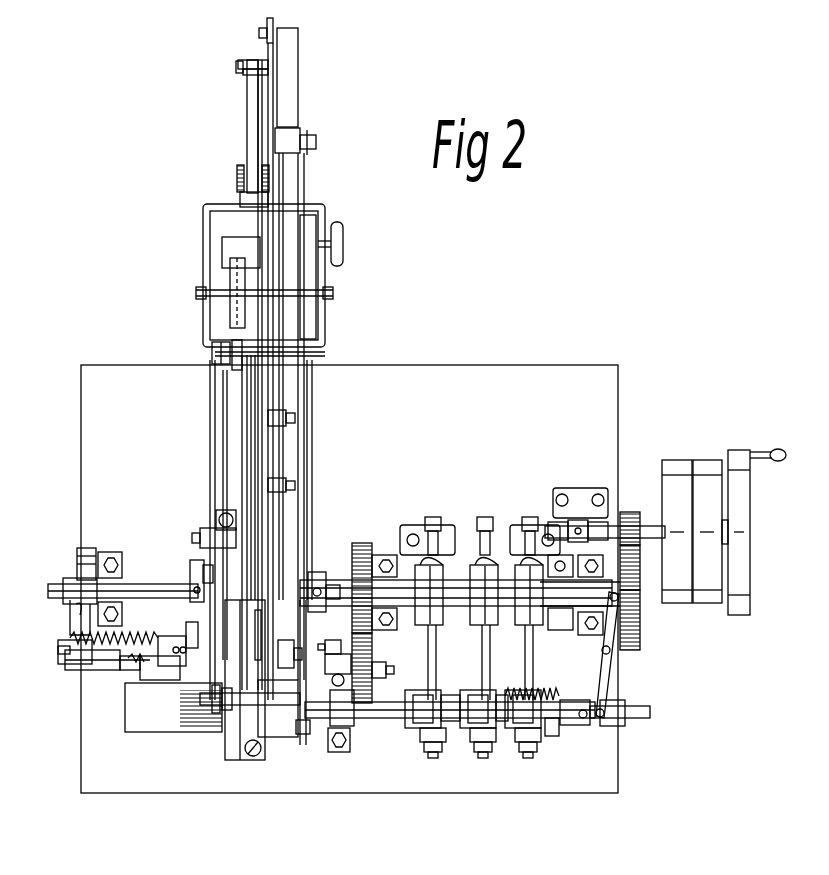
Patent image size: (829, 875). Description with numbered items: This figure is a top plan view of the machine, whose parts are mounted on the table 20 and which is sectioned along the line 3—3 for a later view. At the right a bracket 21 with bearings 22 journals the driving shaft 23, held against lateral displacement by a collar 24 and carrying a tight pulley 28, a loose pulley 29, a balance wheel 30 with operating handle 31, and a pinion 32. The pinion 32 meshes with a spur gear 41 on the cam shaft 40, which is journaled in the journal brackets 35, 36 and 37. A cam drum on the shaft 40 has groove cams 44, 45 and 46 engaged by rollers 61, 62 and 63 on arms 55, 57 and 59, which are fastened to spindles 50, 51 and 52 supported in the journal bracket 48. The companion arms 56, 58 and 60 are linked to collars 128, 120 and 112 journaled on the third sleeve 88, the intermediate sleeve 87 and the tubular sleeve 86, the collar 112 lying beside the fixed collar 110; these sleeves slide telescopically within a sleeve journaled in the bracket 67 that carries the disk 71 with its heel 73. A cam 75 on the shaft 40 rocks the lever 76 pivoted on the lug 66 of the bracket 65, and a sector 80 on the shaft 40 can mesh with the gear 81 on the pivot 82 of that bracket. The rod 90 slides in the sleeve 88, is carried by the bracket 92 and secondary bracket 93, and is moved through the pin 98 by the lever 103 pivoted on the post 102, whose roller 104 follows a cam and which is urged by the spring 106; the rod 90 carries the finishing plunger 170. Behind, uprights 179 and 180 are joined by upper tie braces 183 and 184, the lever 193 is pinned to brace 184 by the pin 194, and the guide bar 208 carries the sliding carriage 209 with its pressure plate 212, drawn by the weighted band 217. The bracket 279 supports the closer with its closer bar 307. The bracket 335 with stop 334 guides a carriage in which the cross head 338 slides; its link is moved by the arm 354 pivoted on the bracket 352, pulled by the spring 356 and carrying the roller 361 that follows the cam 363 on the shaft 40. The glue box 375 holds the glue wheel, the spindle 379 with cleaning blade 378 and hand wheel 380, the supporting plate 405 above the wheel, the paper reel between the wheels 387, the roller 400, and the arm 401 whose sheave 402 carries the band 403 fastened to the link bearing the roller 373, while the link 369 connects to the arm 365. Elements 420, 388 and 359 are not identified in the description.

The table 20 is at (349, 579).
The arm 401 is at (298, 78).
The sheave 402 is at (267, 24).
The band 403 is at (264, 50).
The roller 373 is at (243, 78).
The bar 420 is at (250, 136).
The arm 365 is at (312, 160).
The wheels 387 is at (237, 178).
The ratchet 388 is at (269, 180).
The roller 400 is at (240, 196).
The glue box 375 is at (205, 223).
The cleaning blade 378 is at (224, 253).
The supporting plate 405 is at (232, 310).
The spindle 379 is at (318, 250).
The hand wheel 380 is at (342, 228).
The link 369 is at (310, 320).
The cam 363 is at (325, 355).
The closer bar 307 is at (218, 365).
The upright 180 is at (242, 371).
The guide bar 208 is at (210, 422).
The band 217 is at (225, 455).
The upper tie brace 183 is at (243, 480).
The upper tie brace 184 is at (272, 440).
The lever 193 is at (300, 463).
The pin 194 is at (295, 418).
The section line 3 is at (196, 515).
The cam shaft 40 is at (123, 585).
The journal bracket 37 is at (122, 562).
The roller 361 is at (70, 626).
The spring 356 is at (114, 629).
The arm 354 is at (58, 652).
The plate 359 is at (85, 670).
The bracket 352 is at (118, 675).
The bracket 335 is at (165, 636).
The stop 334 is at (176, 656).
The cross head 338 is at (165, 680).
The sliding carriage 209 is at (195, 608).
The finishing plunger 170 is at (150, 732).
The bracket 279 is at (250, 760).
The upright 179 is at (252, 704).
The pressure plate 212 is at (275, 635).
The lever 76 is at (310, 670).
The heel 73 is at (298, 737).
The disk 71 is at (306, 745).
The journal bracket 67 is at (344, 752).
The journal bracket 36 is at (456, 592).
The cam 75 is at (320, 572).
The sector 80 is at (362, 543).
The gear 81 is at (372, 650).
The pivot 82 is at (394, 670).
The journal bracket 65 is at (330, 640).
The lug 66 is at (340, 654).
The arm 59 is at (400, 545).
The journal bracket 48 is at (458, 534).
The arm 57 is at (510, 548).
The roller 63 is at (423, 592).
The groove cam 46 is at (436, 595).
The roller 62 is at (476, 592).
The groove cam 45 is at (488, 595).
The roller 61 is at (521, 592).
The groove cam 44 is at (532, 595).
The spindle 52 is at (437, 655).
The spindle 51 is at (491, 655).
The spindle 50 is at (540, 650).
The arm 55 is at (556, 552).
The journal bracket 35 is at (578, 636).
The roller 104 is at (580, 594).
The tubular sleeve 86 is at (385, 720).
The collar 110 is at (395, 698).
The collar 112 is at (418, 690).
The intermediate sleeve 87 is at (452, 690).
The collar 120 is at (470, 682).
The third sleeve 88 is at (500, 695).
The collar 128 is at (512, 728).
The arm 60 is at (446, 740).
The arm 58 is at (482, 750).
The arm 56 is at (538, 750).
The spring 106 is at (548, 688).
The bracket 92 is at (575, 712).
The rod 90 is at (555, 736).
The pin 98 is at (583, 720).
The secondary bracket 93 is at (625, 700).
The lever 103 is at (606, 676).
The post 102 is at (602, 652).
The spur gear 41 is at (640, 632).
The driving shaft 23 is at (641, 567).
The pinion 32 is at (632, 512).
The bracket 21 is at (582, 488).
The bearings 22 is at (605, 531).
The collar 24 is at (580, 518).
The tight pulley 28 is at (677, 460).
The loose pulley 29 is at (708, 460).
The balance wheel 30 is at (750, 502).
The operating handle 31 is at (770, 448).